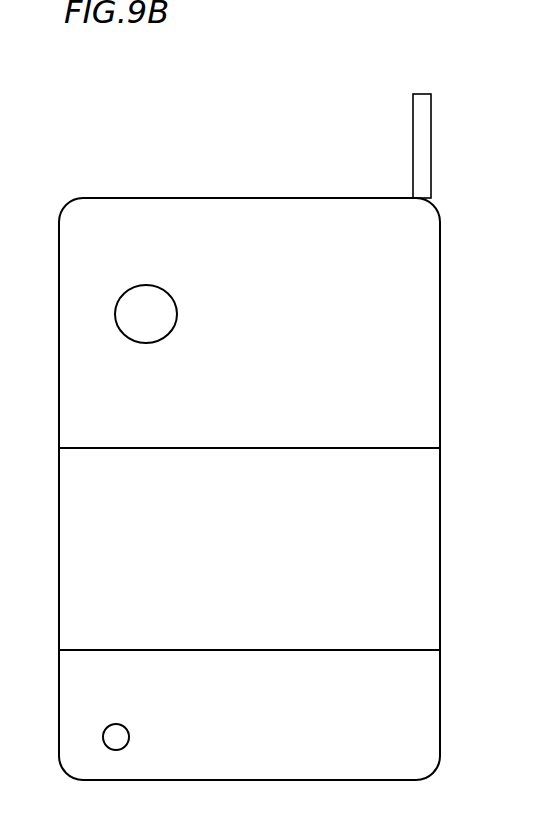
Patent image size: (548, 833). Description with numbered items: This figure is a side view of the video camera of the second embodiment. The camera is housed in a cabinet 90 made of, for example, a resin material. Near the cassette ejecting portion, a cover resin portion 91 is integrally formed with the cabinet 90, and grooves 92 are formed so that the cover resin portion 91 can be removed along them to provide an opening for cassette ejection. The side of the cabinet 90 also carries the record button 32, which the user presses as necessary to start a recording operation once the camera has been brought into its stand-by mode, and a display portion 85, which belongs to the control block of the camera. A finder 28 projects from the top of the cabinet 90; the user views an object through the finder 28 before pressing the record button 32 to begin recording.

The finder 28 is at (421, 138).
The record button 32 is at (113, 317).
The display portion 85 is at (102, 738).
The cabinet 90 is at (59, 413).
The cover resin portion 91 is at (81, 552).
The grooves 92 is at (97, 649).